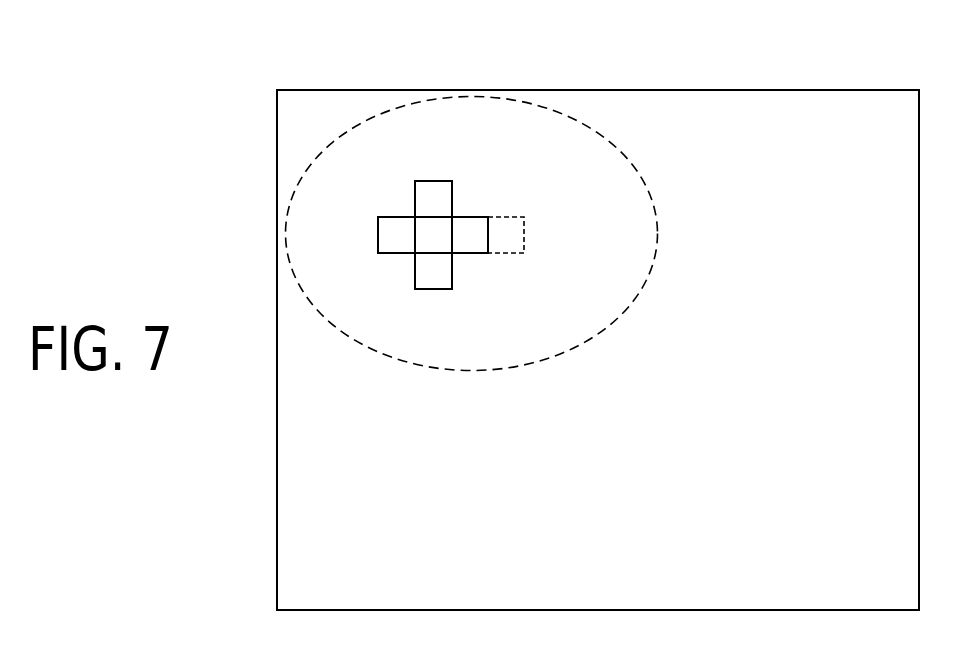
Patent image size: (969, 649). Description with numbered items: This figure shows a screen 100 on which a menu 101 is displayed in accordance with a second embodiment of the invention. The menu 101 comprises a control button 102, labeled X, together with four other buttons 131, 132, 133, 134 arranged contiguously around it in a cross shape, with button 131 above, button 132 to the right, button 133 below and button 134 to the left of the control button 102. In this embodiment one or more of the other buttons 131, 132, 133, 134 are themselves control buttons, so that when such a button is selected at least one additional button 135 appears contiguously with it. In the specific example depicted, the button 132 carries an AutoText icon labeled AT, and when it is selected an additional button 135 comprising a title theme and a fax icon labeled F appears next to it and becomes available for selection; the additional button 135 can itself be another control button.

The screen 100 is at (797, 48).
The menu 101 is at (658, 233).
The control button 102 is at (418, 240).
The other button 131 is at (432, 180).
The button 132 is at (473, 217).
The other button 133 is at (453, 275).
The other button 134 is at (378, 242).
The additional button 135 is at (525, 217).